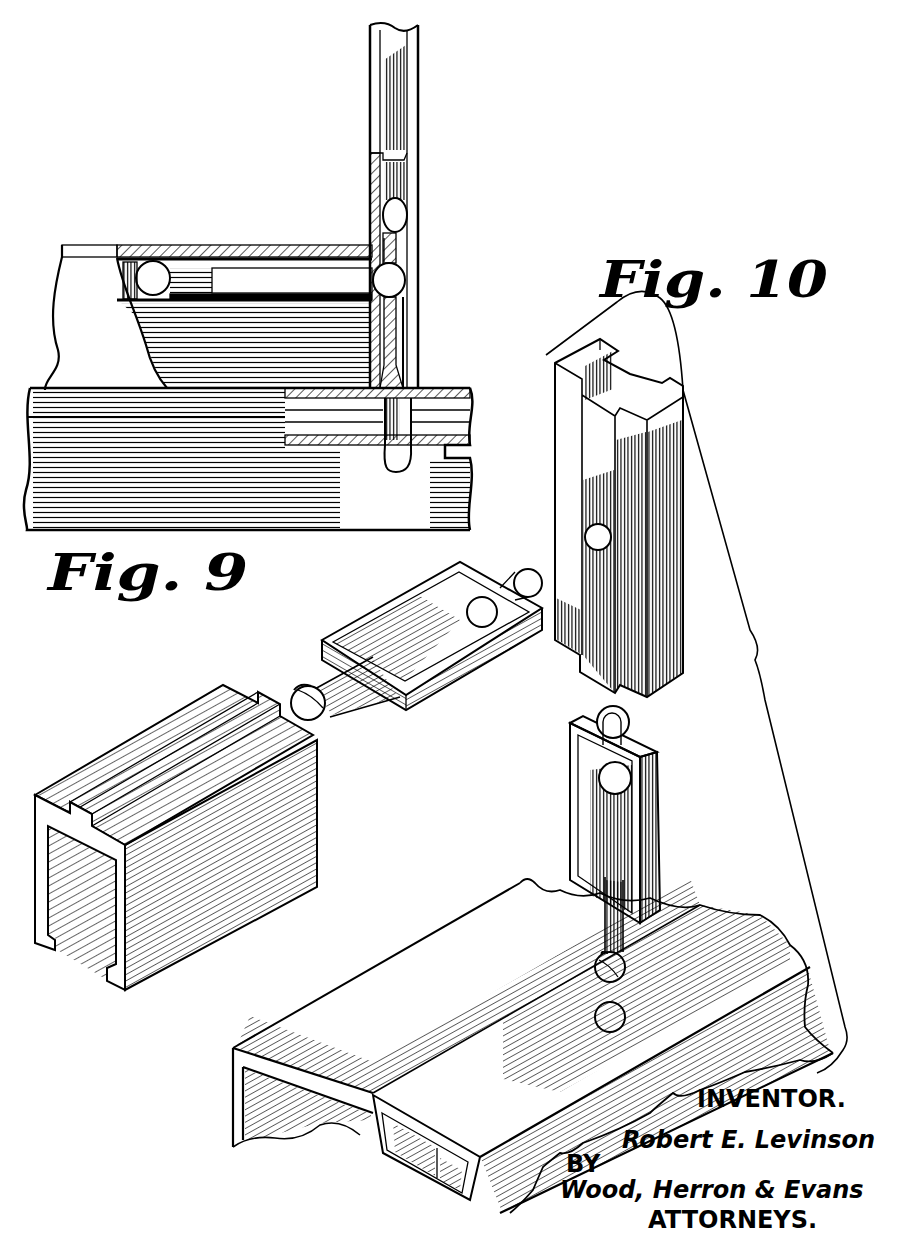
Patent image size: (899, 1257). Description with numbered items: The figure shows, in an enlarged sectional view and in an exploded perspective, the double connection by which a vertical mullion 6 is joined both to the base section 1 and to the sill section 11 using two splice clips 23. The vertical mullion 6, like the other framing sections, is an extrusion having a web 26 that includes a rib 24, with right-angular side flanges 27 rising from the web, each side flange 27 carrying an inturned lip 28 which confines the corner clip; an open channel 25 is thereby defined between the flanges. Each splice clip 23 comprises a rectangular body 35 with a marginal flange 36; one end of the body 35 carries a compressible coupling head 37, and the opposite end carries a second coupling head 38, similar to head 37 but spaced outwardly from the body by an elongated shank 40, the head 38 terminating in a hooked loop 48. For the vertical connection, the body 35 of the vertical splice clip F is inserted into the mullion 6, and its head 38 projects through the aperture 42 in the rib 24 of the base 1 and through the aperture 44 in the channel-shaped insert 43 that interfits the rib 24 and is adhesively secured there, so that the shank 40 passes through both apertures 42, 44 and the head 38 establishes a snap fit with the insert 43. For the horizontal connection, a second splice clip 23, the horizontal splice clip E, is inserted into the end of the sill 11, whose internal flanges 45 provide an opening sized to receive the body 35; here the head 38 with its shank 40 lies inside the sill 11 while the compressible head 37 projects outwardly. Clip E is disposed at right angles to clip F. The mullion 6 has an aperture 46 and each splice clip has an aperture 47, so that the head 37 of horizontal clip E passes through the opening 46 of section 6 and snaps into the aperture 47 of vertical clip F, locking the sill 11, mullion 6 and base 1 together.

In FIG. 9, the base section 1 is at (93, 502).
In FIG. 10, the base section 1 is at (308, 1025).
In FIG. 9, the vertical mullion 6 is at (413, 66).
In FIG. 10, the vertical mullion 6 is at (677, 655).
In FIG. 9, the sill section 11 is at (78, 282).
In FIG. 10, the sill section 11 is at (98, 760).
In FIG. 9, the splice clip 23 is at (243, 272).
In FIG. 10, the splice clip 23 is at (433, 692).
In FIG. 9, the rib 24 is at (111, 243).
In FIG. 10, the rib 24 is at (590, 420).
In FIG. 10, the channel 25 is at (640, 376).
In FIG. 9, the web 26 is at (378, 97).
In FIG. 10, the web 26 is at (637, 582).
In FIG. 9, the side flanges 27 is at (403, 107).
In FIG. 10, the side flanges 27 is at (578, 354).
In FIG. 10, the inturned lip 28 is at (608, 342).
In FIG. 9, the rectangular body 35 is at (405, 247).
In FIG. 10, the rectangular body 35 is at (375, 640).
In FIG. 10, the marginal flange 36 is at (472, 660).
In FIG. 9, the compressible coupling head 37 is at (405, 212).
In FIG. 10, the compressible coupling head 37 is at (535, 575).
In FIG. 9, the second coupling head 38 is at (153, 272).
In FIG. 10, the second coupling head 38 is at (318, 706).
In FIG. 9, the elongated shank 40 is at (192, 270).
In FIG. 10, the elongated shank 40 is at (363, 692).
In FIG. 9, the aperture 42 is at (440, 375).
In FIG. 10, the aperture 42 is at (625, 1014).
In FIG. 9, the channel-shaped insert 43 is at (462, 455).
In FIG. 10, the channel-shaped insert 43 is at (405, 1165).
In FIG. 9, the aperture 44 is at (362, 438).
In FIG. 9, the internal flanges 45 is at (268, 300).
In FIG. 10, the internal flanges 45 is at (52, 848).
In FIG. 9, the aperture 46 is at (376, 248).
In FIG. 10, the aperture 46 is at (586, 535).
In FIG. 9, the aperture 47 is at (405, 256).
In FIG. 10, the aperture 47 is at (490, 618).
In FIG. 10, the loop 48 is at (312, 690).
In FIG. 9, the horizontal splice clip E is at (285, 270).
In FIG. 10, the horizontal splice clip E is at (378, 612).
In FIG. 9, the vertical splice clip F is at (400, 337).
In FIG. 10, the vertical splice clip F is at (653, 770).